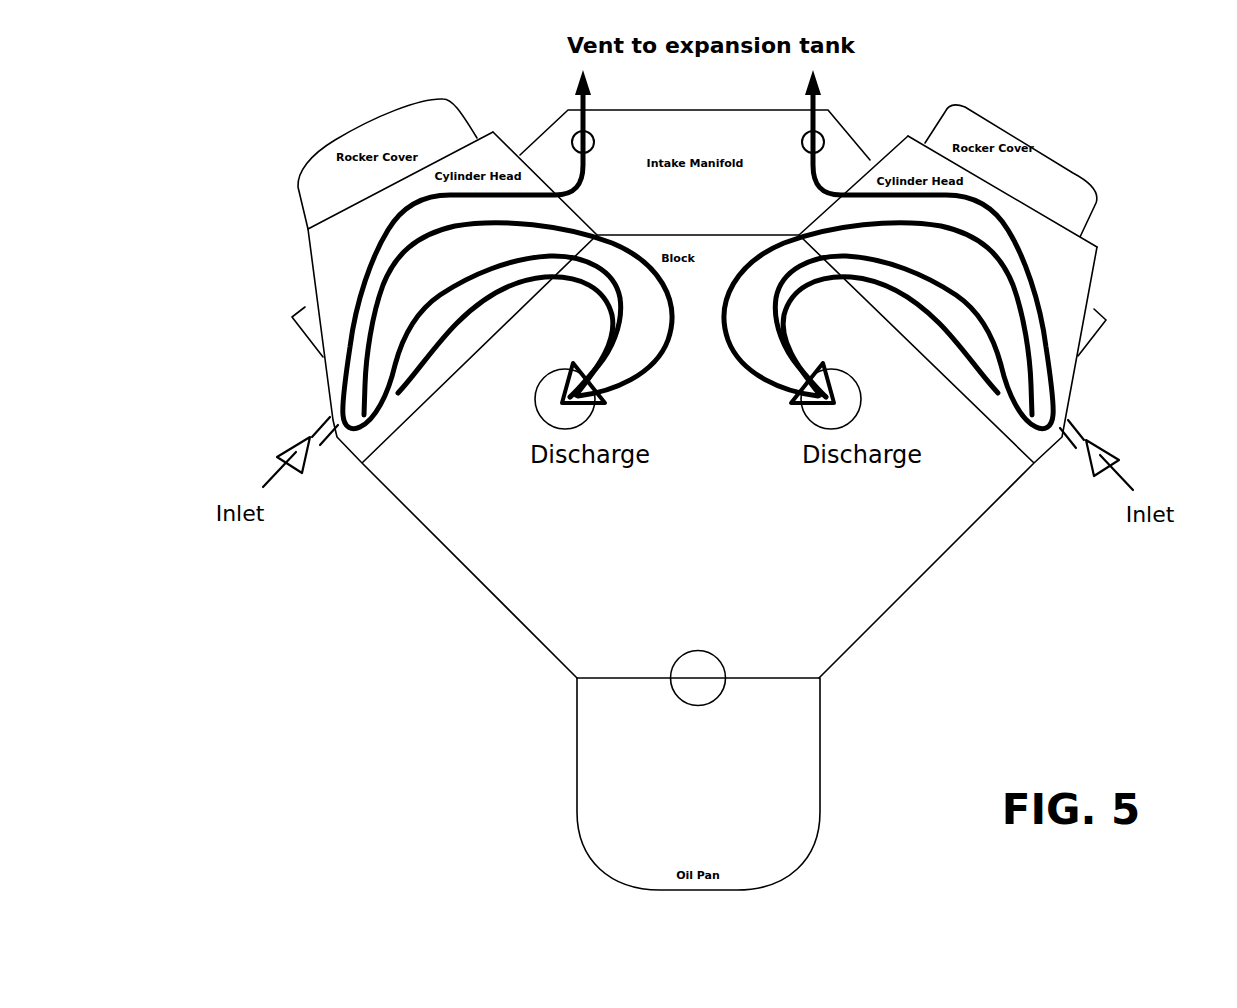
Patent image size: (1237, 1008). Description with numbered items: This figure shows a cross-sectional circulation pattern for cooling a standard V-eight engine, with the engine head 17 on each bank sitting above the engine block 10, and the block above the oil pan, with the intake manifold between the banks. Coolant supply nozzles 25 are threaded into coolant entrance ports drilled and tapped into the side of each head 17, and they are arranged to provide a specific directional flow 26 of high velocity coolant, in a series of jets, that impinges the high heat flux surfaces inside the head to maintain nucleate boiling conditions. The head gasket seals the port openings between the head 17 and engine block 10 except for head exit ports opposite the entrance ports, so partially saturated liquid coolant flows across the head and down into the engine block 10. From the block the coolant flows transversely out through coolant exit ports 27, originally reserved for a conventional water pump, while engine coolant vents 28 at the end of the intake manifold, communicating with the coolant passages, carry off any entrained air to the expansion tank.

The engine block 10 is at (538, 567).
The engine head 17 is at (1085, 262).
The coolant supply nozzles 25 is at (1078, 437).
The directional flow 26 is at (990, 388).
The coolant exit ports 27 is at (903, 411).
The engine coolant vents 28 is at (824, 132).